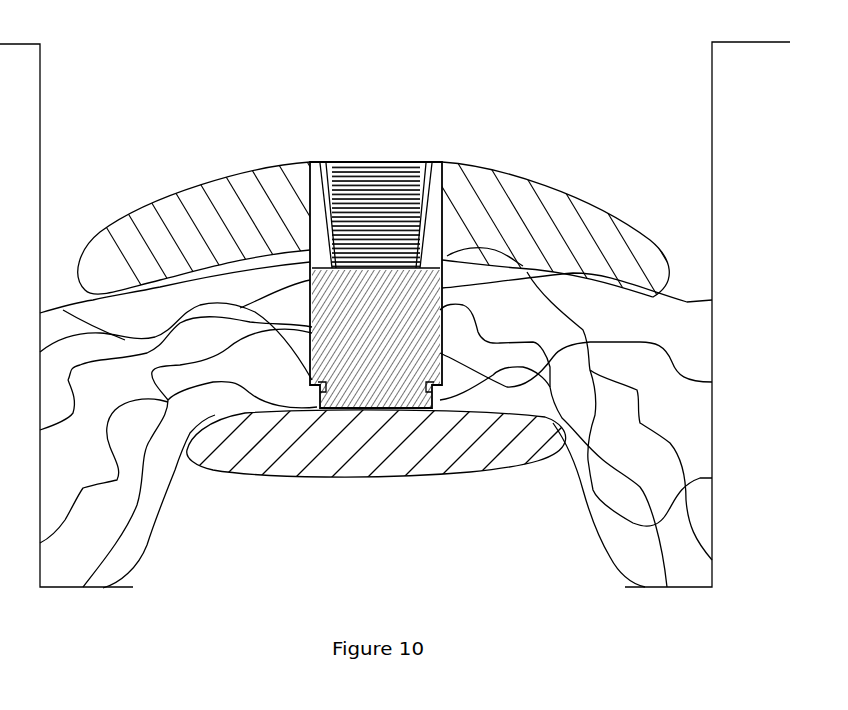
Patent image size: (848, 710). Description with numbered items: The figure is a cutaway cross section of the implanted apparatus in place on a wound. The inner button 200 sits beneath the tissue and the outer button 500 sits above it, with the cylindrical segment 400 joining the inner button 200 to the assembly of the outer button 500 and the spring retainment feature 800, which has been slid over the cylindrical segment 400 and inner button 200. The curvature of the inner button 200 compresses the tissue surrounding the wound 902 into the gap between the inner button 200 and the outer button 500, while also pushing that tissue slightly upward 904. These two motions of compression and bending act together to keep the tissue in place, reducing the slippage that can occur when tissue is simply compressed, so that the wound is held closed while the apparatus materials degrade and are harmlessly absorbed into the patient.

The inner button 200 is at (300, 478).
The cylindrical segment 400 is at (413, 408).
The outer button 500 is at (525, 180).
The spring retainment feature 800 is at (313, 161).
The tissue surrounding the wound 902 is at (690, 548).
The upward push of the tissue 904 is at (523, 353).